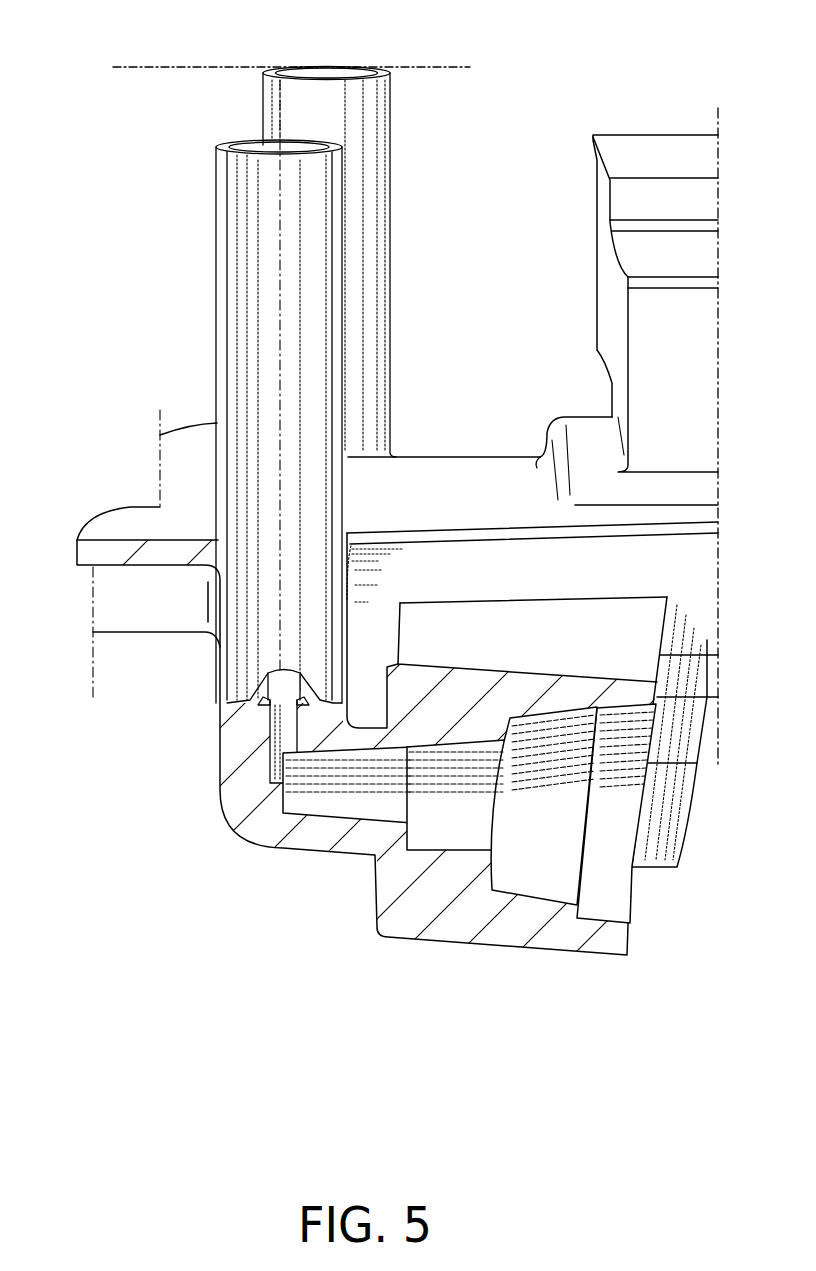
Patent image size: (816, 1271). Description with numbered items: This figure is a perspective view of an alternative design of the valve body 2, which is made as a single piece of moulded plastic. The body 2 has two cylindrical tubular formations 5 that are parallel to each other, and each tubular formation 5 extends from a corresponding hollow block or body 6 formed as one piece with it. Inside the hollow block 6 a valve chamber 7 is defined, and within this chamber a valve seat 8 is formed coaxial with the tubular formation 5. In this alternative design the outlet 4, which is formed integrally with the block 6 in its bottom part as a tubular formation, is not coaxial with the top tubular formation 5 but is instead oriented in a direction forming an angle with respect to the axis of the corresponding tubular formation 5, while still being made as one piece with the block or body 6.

The valve body 2 is at (478, 211).
The outlet 4 is at (545, 828).
The cylindrical tubular formation 5 is at (214, 279).
The hollow block 6 is at (473, 477).
The valve chamber 7 is at (270, 607).
The valve seat 8 is at (289, 665).